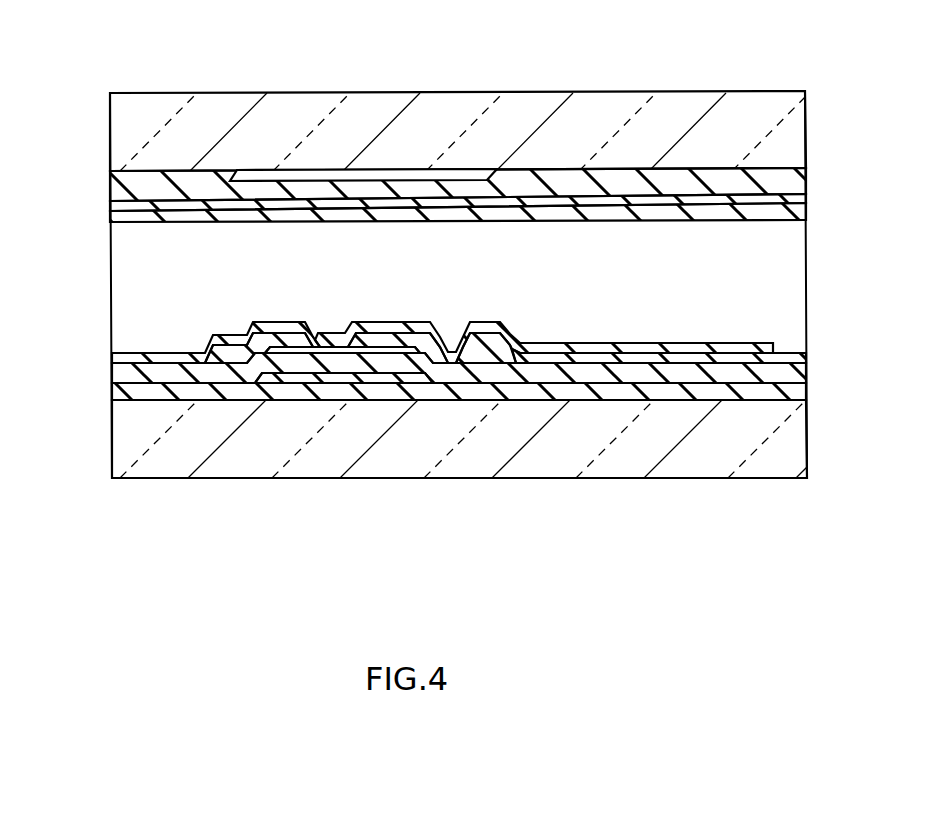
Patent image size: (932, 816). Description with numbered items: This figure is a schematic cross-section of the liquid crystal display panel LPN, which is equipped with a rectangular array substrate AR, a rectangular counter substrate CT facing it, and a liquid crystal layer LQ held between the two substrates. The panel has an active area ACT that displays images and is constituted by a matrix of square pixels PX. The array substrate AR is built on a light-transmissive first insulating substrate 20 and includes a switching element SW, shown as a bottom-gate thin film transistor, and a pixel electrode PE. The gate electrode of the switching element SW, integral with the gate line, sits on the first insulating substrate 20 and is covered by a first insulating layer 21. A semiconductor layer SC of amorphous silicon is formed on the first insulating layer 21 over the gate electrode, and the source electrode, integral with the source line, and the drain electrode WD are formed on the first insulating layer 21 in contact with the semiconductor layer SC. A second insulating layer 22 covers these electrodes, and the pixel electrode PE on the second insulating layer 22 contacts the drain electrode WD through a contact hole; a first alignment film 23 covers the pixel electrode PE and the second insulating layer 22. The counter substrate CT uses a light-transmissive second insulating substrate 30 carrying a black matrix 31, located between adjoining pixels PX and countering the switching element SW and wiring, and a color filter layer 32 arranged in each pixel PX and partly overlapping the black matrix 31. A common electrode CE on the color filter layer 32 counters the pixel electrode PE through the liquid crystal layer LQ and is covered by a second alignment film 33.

The liquid crystal display panel LPN is at (828, 72).
The active area ACT is at (810, 547).
The counter substrate CT is at (92, 93).
The array substrate AR is at (92, 352).
The liquid crystal layer LQ is at (127, 282).
The pixel PX is at (588, 486).
The second insulating substrate 30 is at (792, 129).
The black matrix 31 is at (344, 176).
The color filter layer 32 is at (481, 121).
The common electrode CE is at (548, 200).
The second alignment film 33 is at (790, 212).
The first insulating substrate 20 is at (790, 447).
The first insulating layer 21 is at (790, 393).
The second insulating layer 22 is at (790, 370).
The first alignment film 23 is at (803, 350).
The pixel electrode PE is at (616, 347).
The switching element SW is at (322, 410).
The semiconductor layer SC is at (335, 342).
The drain electrode WD is at (388, 338).